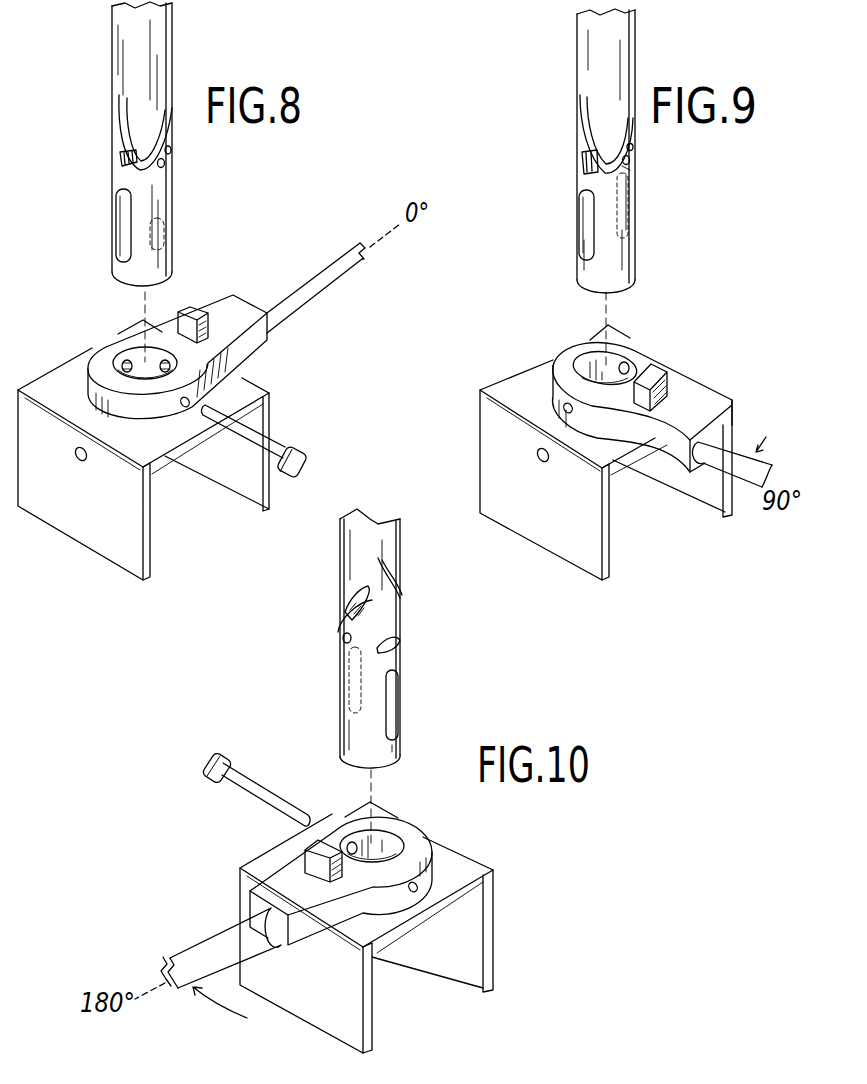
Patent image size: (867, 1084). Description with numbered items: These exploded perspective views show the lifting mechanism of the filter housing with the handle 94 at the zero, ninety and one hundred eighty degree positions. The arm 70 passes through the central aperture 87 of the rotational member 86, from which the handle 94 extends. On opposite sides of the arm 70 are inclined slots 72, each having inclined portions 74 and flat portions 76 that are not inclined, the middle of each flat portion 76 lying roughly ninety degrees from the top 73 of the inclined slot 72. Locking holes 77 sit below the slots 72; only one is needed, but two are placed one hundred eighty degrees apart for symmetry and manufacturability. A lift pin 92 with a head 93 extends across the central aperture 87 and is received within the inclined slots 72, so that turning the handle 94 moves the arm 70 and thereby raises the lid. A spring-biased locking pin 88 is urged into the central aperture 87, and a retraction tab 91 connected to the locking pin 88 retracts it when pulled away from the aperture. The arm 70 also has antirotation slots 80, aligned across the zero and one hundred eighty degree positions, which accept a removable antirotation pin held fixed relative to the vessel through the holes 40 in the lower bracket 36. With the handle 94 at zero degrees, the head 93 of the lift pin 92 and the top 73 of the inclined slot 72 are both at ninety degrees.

In FIG. 8, the lower bracket 36 is at (103, 547).
In FIG. 9, the lower bracket 36 is at (606, 452).
In FIG. 10, the lower bracket 36 is at (497, 913).
In FIG. 8, the holes 40 is at (75, 452).
In FIG. 9, the holes 40 is at (539, 460).
In FIG. 8, the arm 70 is at (166, 65).
In FIG. 9, the arm 70 is at (588, 40).
In FIG. 10, the arm 70 is at (370, 677).
In FIG. 8, the inclined slots 72 is at (165, 160).
In FIG. 9, the inclined slots 72 is at (630, 158).
In FIG. 8, the top 73 is at (167, 107).
In FIG. 9, the top 73 is at (623, 102).
In FIG. 10, the top 73 is at (362, 586).
In FIG. 8, the inclined portions 74 is at (171, 153).
In FIG. 9, the inclined portions 74 is at (633, 148).
In FIG. 9, the flat portions 76 is at (587, 170).
In FIG. 10, the flat portions 76 is at (400, 652).
In FIG. 8, the locking holes 77 is at (127, 182).
In FIG. 9, the locking holes 77 is at (630, 166).
In FIG. 10, the locking holes 77 is at (343, 647).
In FIG. 8, the antirotation slots 80 is at (125, 230).
In FIG. 9, the antirotation slots 80 is at (582, 224).
In FIG. 10, the antirotation slots 80 is at (394, 703).
In FIG. 8, the rotational member 86 is at (218, 308).
In FIG. 8, the central aperture 87 is at (123, 350).
In FIG. 9, the central aperture 87 is at (580, 351).
In FIG. 10, the central aperture 87 is at (403, 840).
In FIG. 8, the locking pin 88 is at (138, 368).
In FIG. 8, the retraction tab 91 is at (257, 350).
In FIG. 9, the retraction tab 91 is at (653, 367).
In FIG. 10, the retraction tab 91 is at (308, 863).
In FIG. 8, the lift pin 92 is at (272, 443).
In FIG. 10, the lift pin 92 is at (257, 787).
In FIG. 8, the head 93 is at (308, 458).
In FIG. 10, the head 93 is at (224, 757).
In FIG. 8, the handle 94 is at (328, 257).
In FIG. 9, the handle 94 is at (734, 434).
In FIG. 10, the handle 94 is at (222, 937).